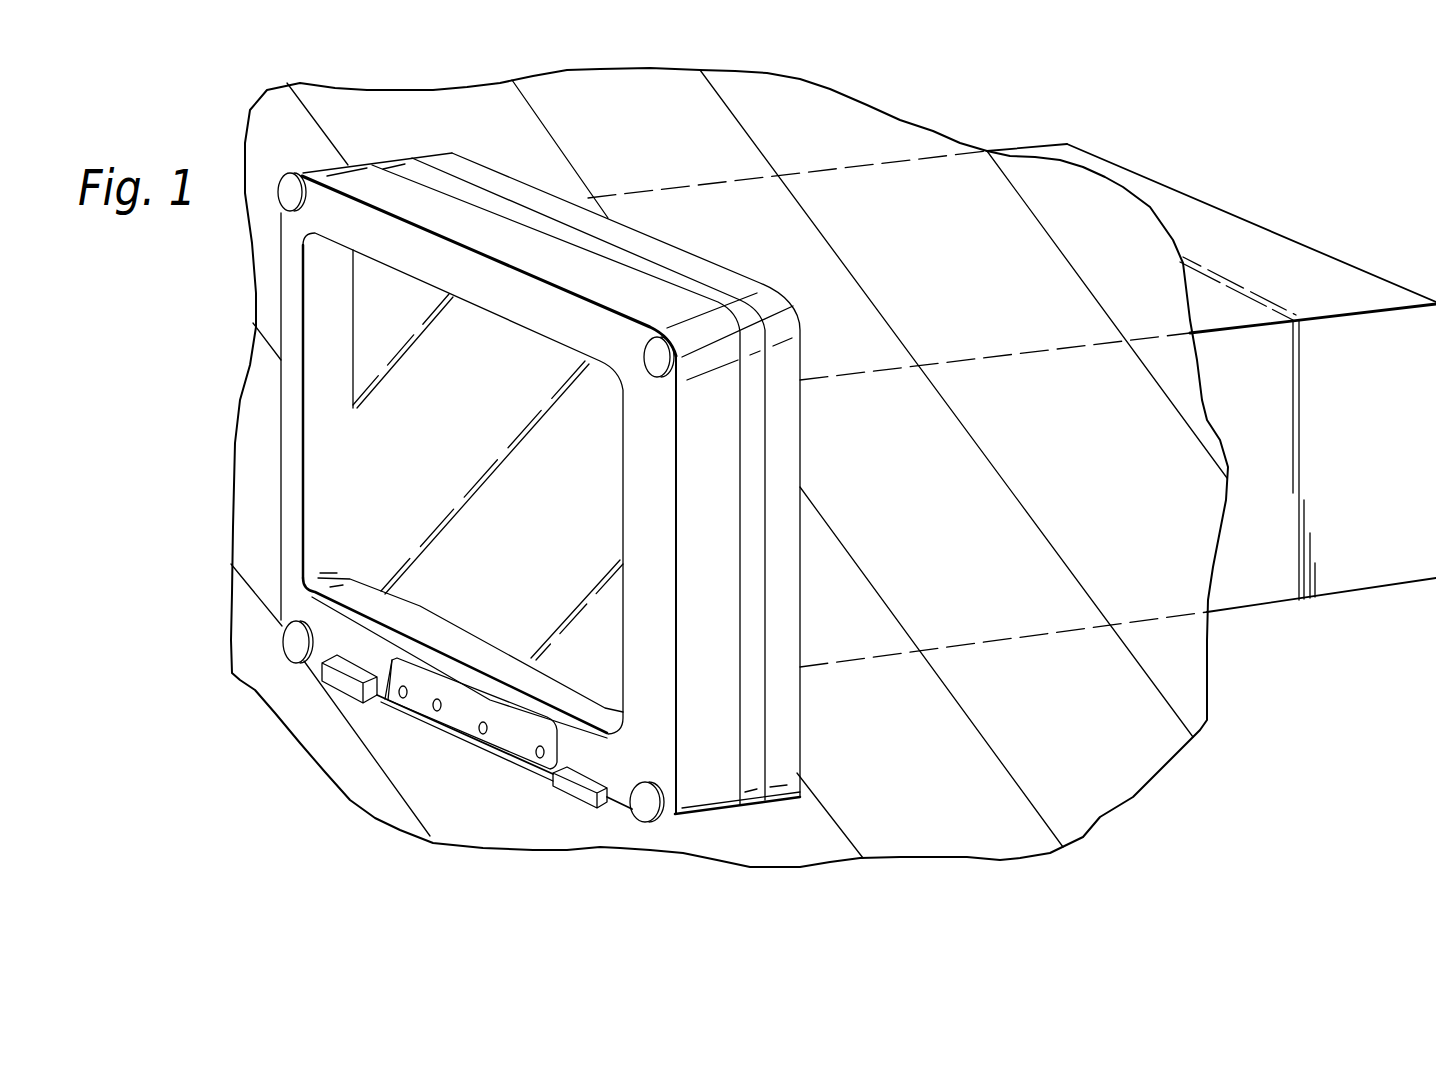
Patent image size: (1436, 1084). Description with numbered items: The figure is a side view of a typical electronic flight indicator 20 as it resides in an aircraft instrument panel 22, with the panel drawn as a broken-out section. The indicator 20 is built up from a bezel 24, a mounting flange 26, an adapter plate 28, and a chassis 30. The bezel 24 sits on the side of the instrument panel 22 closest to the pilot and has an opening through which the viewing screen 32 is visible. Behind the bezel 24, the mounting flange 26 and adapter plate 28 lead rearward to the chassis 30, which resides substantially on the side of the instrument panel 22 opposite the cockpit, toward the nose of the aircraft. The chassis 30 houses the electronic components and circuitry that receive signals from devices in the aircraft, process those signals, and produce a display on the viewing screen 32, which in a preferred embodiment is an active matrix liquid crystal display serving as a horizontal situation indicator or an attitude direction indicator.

The electronic flight indicator 20 is at (517, 470).
The aircraft instrument panel 22 is at (873, 110).
The bezel 24 is at (680, 822).
The mounting flange 26 is at (747, 813).
The adapter plate 28 is at (787, 792).
The chassis 30 is at (1267, 603).
The viewing screen 32 is at (365, 346).